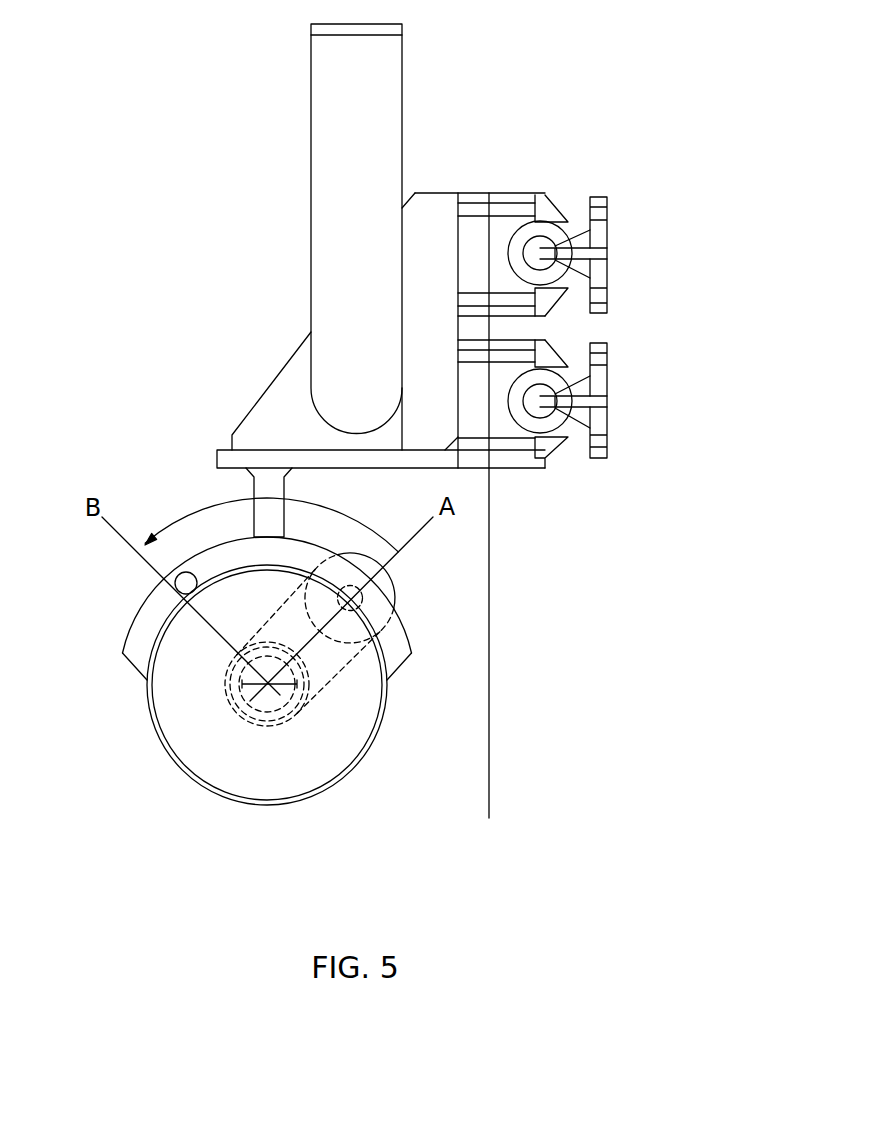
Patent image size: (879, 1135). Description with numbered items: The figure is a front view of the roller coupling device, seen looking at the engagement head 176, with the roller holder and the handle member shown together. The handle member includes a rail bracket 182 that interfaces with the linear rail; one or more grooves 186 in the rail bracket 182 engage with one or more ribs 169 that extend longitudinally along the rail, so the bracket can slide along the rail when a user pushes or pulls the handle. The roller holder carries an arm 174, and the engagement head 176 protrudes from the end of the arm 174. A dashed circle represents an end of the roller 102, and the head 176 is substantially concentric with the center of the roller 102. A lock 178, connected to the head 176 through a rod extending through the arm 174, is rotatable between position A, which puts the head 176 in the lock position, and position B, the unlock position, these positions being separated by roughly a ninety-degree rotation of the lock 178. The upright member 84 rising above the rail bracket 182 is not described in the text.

The tube 84 is at (311, 97).
The bracket 182 is at (473, 192).
The clamp 186 is at (529, 226).
The wing nut fastener 169 is at (582, 232).
The wheel 102 is at (183, 771).
The axle 174 is at (225, 677).
The hub 176 is at (270, 692).
The boss 178 is at (397, 585).